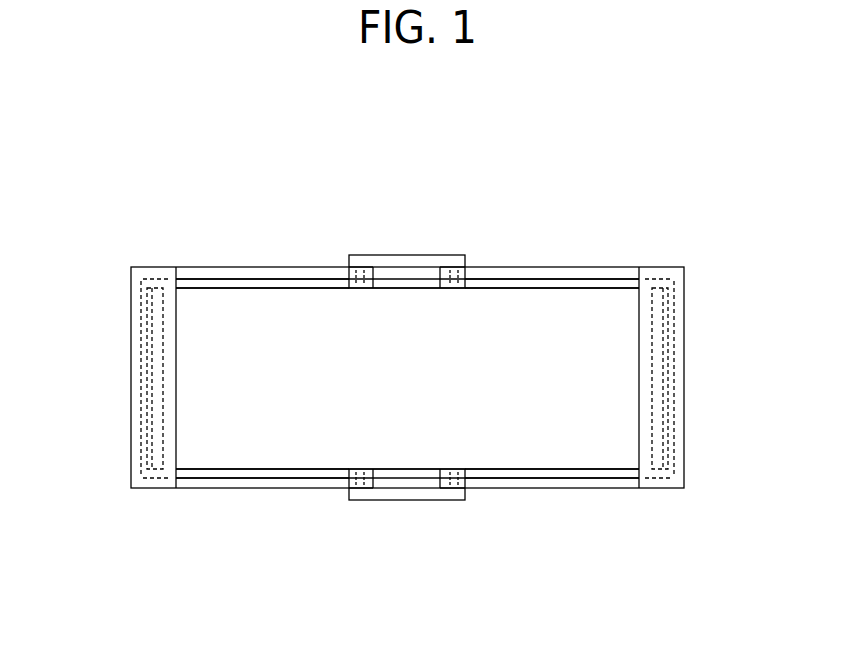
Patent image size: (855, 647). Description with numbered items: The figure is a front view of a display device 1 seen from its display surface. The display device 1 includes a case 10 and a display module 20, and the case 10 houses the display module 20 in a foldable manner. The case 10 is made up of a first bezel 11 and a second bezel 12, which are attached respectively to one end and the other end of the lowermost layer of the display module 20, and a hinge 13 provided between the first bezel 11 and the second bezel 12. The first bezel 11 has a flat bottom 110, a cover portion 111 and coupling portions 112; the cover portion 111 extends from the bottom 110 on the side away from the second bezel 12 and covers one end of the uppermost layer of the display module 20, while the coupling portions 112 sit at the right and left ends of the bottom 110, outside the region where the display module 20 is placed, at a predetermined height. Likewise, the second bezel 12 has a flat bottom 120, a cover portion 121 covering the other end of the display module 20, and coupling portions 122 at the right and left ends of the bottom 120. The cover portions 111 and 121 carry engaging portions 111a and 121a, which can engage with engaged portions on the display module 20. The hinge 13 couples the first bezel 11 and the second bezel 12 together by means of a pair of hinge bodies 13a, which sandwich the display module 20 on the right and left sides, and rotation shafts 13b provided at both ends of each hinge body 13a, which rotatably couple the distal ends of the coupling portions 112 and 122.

The display device 1 is at (684, 222).
The case 10 is at (585, 149).
The first bezel 11 is at (546, 265).
The second bezel 12 is at (300, 263).
The hinge 13 is at (493, 191).
The hinge body 13a is at (422, 255).
The rotation shaft 13b is at (362, 255).
The display module 20 is at (610, 355).
The bottom 110 is at (578, 279).
The cover portion 111 is at (685, 278).
The engaging portion 111a is at (676, 320).
The coupling portion 112 is at (457, 286).
The bottom 120 is at (236, 283).
The cover portion 121 is at (148, 298).
The engaging portion 121a is at (145, 337).
The coupling portion 122 is at (353, 286).